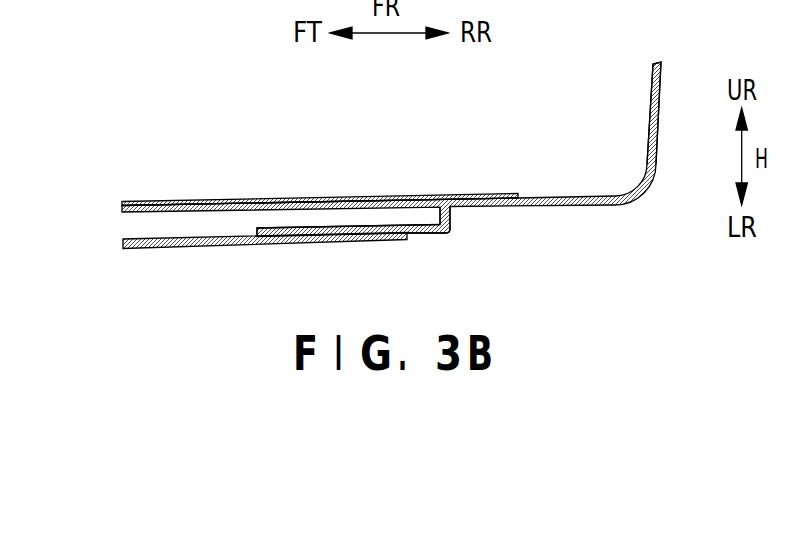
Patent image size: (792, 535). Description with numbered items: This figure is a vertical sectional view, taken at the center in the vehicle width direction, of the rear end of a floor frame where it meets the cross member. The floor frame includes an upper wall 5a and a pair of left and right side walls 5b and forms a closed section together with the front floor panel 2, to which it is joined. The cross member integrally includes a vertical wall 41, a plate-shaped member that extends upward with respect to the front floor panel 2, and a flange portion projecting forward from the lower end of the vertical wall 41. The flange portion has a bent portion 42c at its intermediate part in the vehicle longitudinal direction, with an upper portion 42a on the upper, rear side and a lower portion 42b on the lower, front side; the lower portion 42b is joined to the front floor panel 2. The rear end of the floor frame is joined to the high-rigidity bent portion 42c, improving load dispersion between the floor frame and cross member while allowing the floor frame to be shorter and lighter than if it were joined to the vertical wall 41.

The front floor panel 2 is at (182, 249).
The upper wall 5a is at (230, 199).
The side walls 5b is at (197, 225).
The vertical wall 41 is at (645, 120).
The upper portion 42a is at (575, 194).
The lower portion 42b is at (315, 229).
The bent portion 42c is at (450, 217).